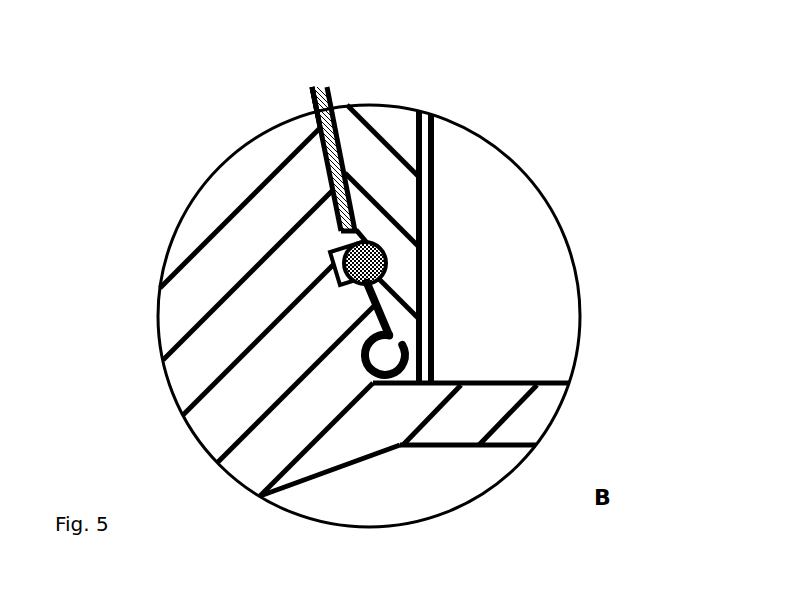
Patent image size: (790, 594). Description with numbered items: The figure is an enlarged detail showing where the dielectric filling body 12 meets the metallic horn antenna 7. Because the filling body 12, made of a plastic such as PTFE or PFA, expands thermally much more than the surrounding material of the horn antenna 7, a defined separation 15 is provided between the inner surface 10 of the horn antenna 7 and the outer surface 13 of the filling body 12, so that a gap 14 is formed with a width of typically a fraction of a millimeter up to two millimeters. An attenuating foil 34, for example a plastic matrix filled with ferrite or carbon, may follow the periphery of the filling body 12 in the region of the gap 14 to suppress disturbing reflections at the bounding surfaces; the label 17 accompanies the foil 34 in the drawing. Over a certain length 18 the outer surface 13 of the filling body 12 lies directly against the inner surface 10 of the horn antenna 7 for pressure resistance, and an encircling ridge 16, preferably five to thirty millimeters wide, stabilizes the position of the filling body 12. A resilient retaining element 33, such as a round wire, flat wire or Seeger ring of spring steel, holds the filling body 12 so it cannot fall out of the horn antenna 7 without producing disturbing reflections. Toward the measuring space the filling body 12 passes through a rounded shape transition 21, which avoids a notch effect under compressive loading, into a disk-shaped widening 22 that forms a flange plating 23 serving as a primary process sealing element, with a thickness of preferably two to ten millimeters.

The horn antenna 7 is at (378, 186).
The inner surface 10 is at (352, 172).
The filling body 12 is at (232, 415).
The outer surface 13 is at (330, 196).
The gap 14 is at (296, 62).
The separation 15 is at (280, 102).
The ridge 16 is at (395, 323).
The edge region 17 is at (309, 112).
The length 18 is at (348, 302).
The shape transition 21 is at (391, 357).
The disk-shaped widening 22 is at (532, 419).
The flange plating 23 is at (470, 415).
The retaining element 33 is at (395, 269).
The attenuating foil 34 is at (315, 102).